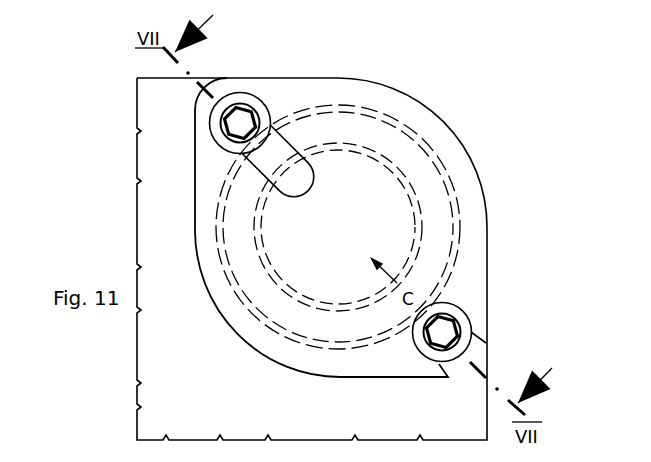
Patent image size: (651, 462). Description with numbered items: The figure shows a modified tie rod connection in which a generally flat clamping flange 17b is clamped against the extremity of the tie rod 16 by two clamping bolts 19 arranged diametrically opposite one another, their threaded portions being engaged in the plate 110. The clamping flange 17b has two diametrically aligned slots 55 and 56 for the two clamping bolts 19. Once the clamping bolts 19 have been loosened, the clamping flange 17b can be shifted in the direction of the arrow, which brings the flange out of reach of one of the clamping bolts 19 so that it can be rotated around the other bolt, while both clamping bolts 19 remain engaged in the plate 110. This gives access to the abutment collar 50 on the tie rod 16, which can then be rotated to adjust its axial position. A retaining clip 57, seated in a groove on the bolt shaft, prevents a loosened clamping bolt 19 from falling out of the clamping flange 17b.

The plate 110 is at (137, 155).
The clamping flange 17b is at (306, 360).
The slot 56 is at (472, 357).
The slot 55 is at (270, 152).
The abutment collar 50 is at (258, 300).
The tie rod 16 is at (303, 309).
The retaining clip 57 is at (288, 183).
The clamping bolt 19 is at (243, 118).